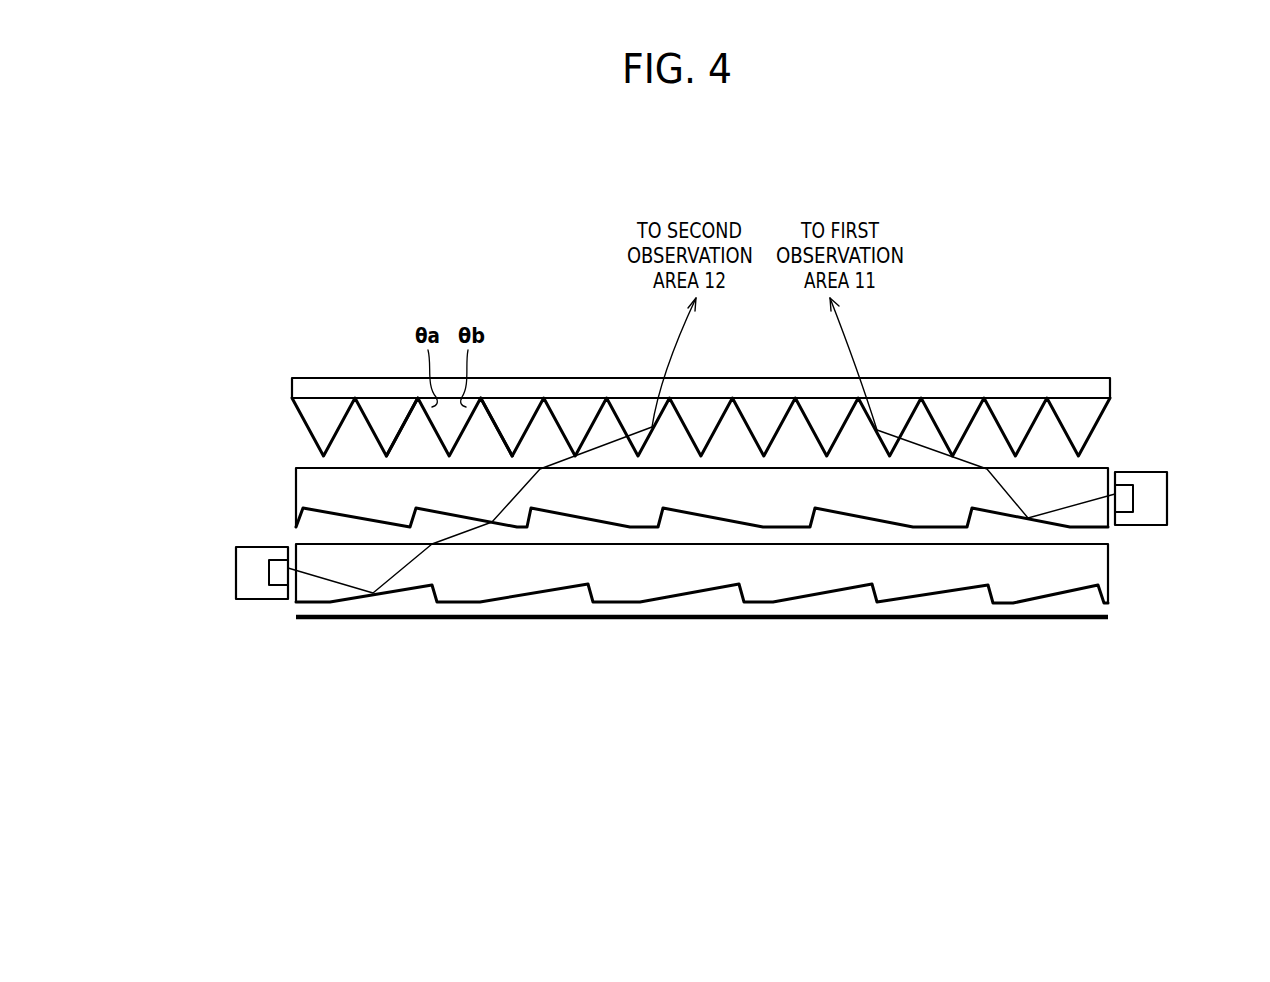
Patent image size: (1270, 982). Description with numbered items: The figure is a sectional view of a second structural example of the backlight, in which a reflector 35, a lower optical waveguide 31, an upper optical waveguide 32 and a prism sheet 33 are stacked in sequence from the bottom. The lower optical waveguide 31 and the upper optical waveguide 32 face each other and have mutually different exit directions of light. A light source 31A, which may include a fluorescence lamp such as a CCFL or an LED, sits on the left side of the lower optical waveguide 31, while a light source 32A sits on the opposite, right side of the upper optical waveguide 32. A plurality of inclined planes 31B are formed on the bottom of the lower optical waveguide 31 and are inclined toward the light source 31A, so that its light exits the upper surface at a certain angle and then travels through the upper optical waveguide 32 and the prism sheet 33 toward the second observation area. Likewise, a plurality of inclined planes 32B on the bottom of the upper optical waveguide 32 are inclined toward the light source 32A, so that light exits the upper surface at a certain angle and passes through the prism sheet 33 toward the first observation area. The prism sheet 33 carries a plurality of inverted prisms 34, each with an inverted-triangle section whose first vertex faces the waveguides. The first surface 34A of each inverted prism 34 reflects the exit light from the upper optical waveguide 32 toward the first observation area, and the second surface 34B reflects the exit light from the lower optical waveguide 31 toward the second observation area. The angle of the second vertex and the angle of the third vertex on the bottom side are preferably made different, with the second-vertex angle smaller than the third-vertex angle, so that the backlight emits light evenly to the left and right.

The lower optical waveguide 31 is at (1108, 565).
The light source 31A is at (243, 573).
The inclined planes 31B is at (405, 590).
The upper optical waveguide 32 is at (296, 490).
The light source 32A is at (1167, 497).
The inclined planes 32B is at (1002, 517).
The prism sheet 33 is at (292, 390).
The inverted prisms 34 is at (1088, 418).
The first surface 34A is at (411, 422).
The second surface 34B is at (486, 422).
The reflector 35 is at (1087, 622).